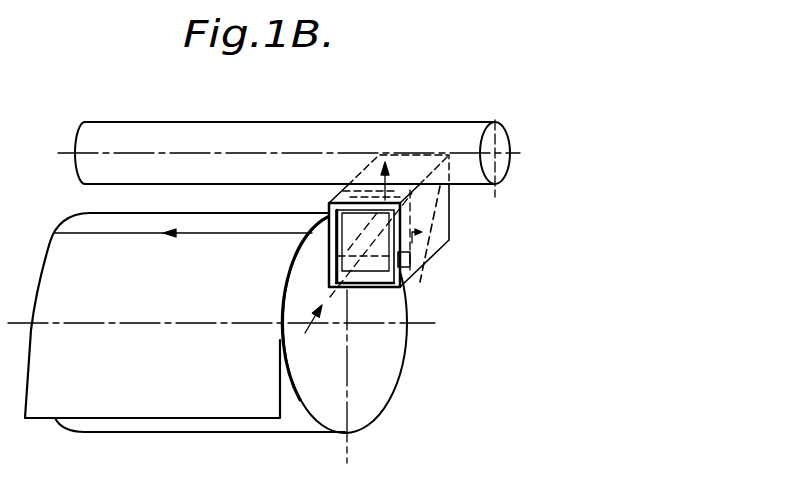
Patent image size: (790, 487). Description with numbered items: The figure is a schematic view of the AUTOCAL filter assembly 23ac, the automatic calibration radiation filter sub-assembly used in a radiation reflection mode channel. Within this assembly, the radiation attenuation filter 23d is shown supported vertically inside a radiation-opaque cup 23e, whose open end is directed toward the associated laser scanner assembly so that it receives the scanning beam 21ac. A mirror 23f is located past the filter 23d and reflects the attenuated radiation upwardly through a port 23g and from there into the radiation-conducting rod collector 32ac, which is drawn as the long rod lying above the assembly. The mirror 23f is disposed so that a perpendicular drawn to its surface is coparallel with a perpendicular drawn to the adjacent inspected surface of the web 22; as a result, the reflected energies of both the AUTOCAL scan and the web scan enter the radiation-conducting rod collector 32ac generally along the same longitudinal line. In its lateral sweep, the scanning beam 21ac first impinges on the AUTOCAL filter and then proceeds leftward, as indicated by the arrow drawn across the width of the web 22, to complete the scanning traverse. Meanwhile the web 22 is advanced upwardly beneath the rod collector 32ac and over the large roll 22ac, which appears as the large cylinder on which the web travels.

The web 22 is at (180, 381).
The large roll 22ac is at (392, 405).
The radiation-conducting rod collector 32ac is at (540, 101).
The AUTOCAL filter assembly 23ac is at (428, 262).
The port 23g is at (359, 169).
The mirror 23f is at (434, 223).
The radiation attenuation filter 23d is at (420, 282).
The radiation-opaque cup 23e is at (372, 289).
The scanning beam 21ac is at (333, 300).